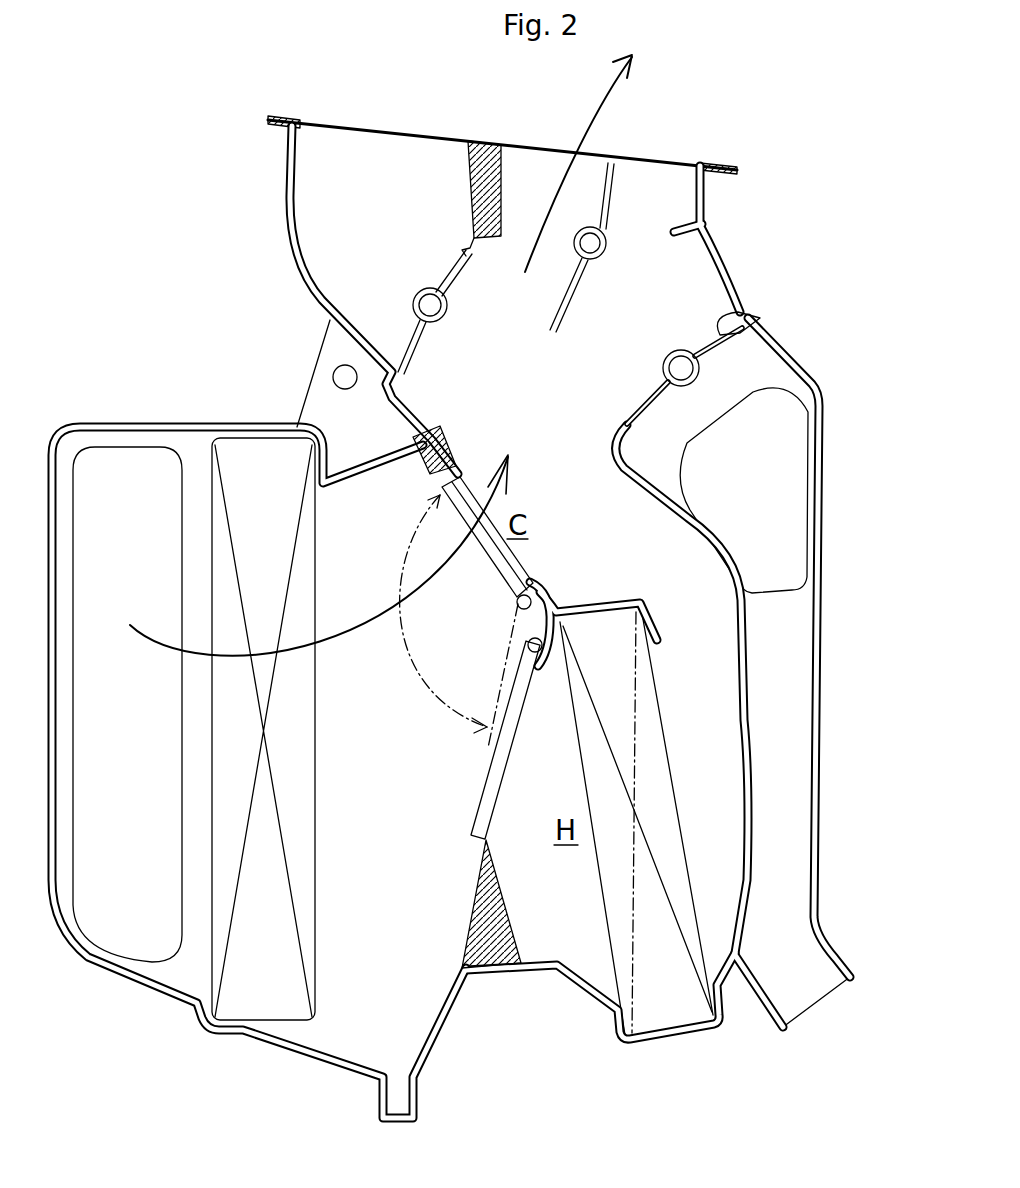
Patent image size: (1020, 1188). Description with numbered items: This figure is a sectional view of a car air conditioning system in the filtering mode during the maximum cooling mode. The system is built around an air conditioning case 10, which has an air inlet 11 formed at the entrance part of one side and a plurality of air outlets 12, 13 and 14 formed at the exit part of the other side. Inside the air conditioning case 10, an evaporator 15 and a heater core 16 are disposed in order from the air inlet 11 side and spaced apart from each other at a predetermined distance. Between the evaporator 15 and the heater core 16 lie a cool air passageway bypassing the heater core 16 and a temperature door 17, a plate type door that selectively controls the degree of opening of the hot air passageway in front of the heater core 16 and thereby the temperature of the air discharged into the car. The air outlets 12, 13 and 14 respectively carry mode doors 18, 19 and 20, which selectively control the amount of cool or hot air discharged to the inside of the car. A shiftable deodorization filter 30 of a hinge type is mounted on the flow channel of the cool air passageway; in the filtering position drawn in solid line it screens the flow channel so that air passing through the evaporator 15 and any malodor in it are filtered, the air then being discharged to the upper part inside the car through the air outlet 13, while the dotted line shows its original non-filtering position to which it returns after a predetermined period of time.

The air conditioning case 10 is at (118, 425).
The air inlet 11 is at (130, 907).
The air outlet 12 is at (360, 140).
The air outlet 13 is at (528, 160).
The air outlet 14 is at (808, 983).
The evaporator 15 is at (265, 985).
The heater core 16 is at (662, 1005).
The temperature door 17 is at (502, 797).
The mode door 18 is at (445, 268).
The mode door 19 is at (617, 183).
The mode door 20 is at (743, 308).
The shiftable deodorization filter 30 is at (418, 486).